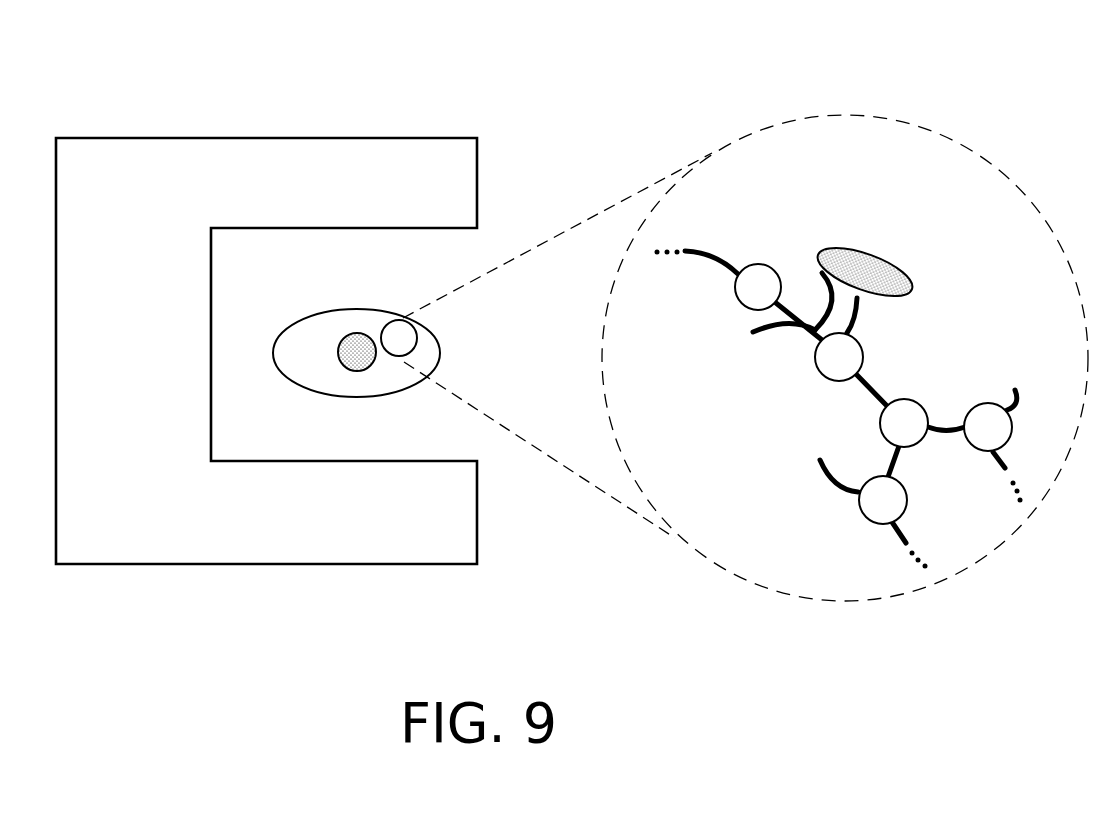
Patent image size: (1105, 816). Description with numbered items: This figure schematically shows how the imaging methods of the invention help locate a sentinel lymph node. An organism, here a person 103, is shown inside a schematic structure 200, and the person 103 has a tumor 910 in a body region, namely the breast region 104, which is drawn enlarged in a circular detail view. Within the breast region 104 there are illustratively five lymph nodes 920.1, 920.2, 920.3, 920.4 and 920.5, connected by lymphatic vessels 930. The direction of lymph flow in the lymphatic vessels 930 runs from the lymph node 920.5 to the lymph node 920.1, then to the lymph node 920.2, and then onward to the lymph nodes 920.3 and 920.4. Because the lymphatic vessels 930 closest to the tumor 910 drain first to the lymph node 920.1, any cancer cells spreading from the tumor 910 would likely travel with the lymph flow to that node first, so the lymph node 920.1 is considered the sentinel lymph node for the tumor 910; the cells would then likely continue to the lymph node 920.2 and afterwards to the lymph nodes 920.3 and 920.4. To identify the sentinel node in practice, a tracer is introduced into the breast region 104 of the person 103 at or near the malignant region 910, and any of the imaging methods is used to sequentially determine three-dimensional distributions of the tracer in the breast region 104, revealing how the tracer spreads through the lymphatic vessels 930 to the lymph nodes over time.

The magnet / C-shaped yoke 200 is at (161, 363).
The person 103 is at (326, 366).
The breast region 104 is at (382, 328).
The tumor 910 is at (863, 250).
The lymph node 920.1 is at (815, 371).
The lymph node 920.2 is at (880, 430).
The lymph node 920.3 is at (859, 512).
The lymph node 920.4 is at (978, 452).
The lymph node 920.5 is at (735, 300).
The lymphatic vessels 930 is at (714, 247).